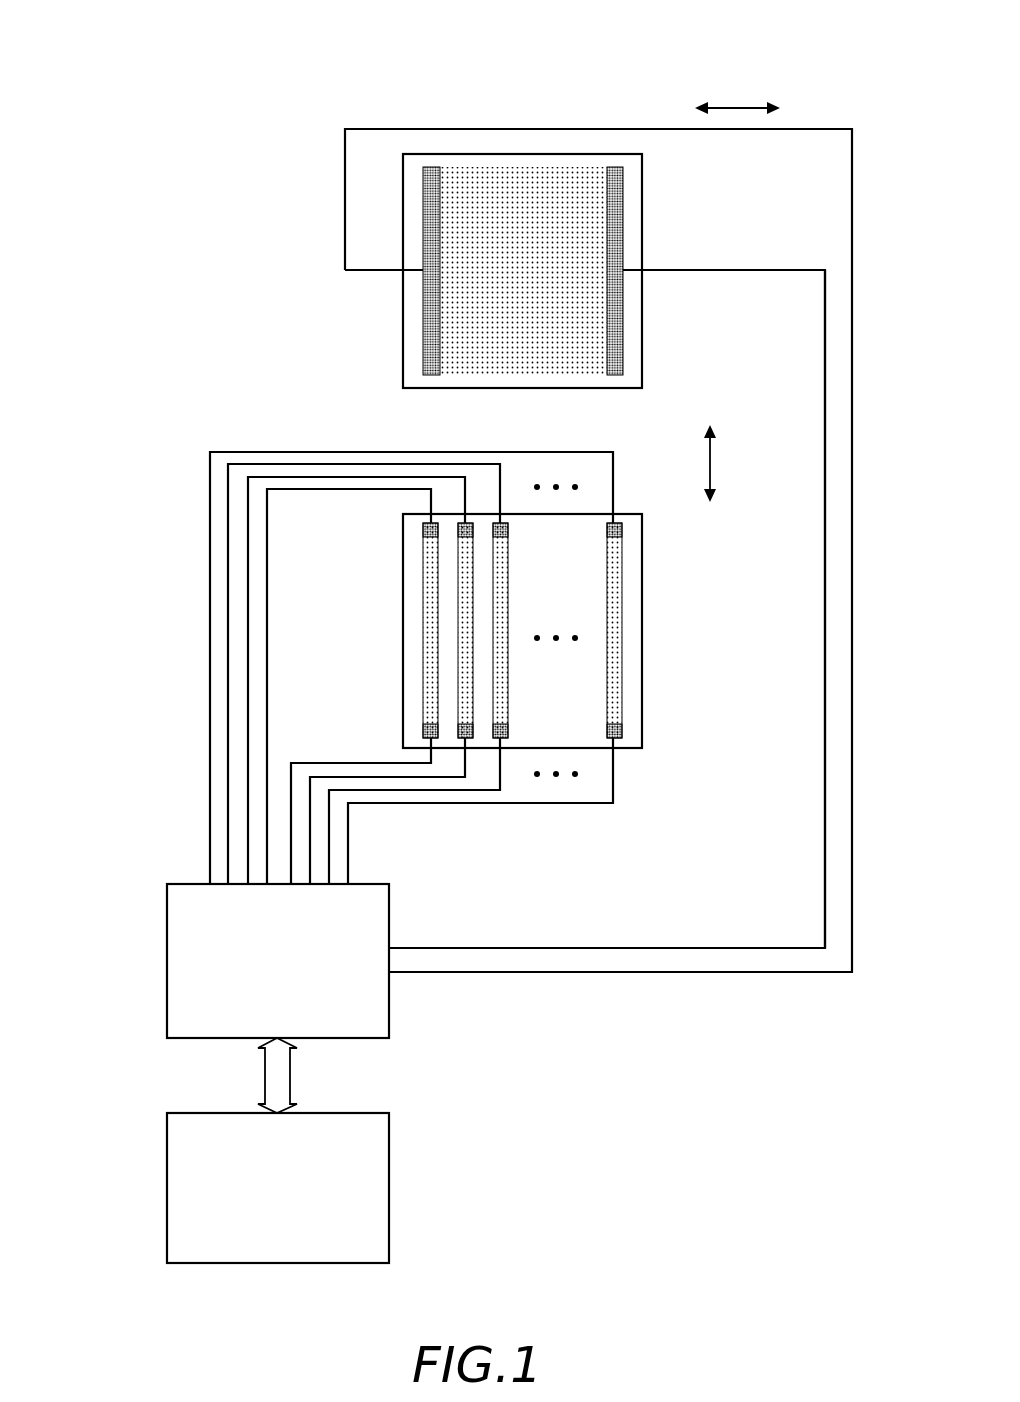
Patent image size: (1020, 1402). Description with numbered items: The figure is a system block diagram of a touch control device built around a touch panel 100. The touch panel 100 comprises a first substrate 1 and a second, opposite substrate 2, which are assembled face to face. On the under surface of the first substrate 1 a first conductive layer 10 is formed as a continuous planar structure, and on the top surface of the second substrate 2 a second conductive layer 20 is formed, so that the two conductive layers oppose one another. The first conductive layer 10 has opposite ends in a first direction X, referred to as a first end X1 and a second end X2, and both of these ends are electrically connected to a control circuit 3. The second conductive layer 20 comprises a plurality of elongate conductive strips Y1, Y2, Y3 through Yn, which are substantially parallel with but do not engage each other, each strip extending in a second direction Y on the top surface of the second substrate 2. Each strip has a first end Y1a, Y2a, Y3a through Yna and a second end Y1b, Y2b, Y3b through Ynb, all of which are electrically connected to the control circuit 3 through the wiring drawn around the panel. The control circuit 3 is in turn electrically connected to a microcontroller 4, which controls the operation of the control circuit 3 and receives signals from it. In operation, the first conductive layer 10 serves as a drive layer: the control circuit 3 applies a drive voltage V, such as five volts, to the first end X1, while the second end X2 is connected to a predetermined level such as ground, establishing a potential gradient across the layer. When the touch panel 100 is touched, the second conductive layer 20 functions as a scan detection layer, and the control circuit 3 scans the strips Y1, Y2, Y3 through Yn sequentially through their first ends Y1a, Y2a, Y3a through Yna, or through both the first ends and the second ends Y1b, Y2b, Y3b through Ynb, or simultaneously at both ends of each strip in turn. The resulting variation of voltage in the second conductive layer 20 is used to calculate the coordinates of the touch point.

The touch panel 100 is at (97, 172).
The first substrate 1 is at (540, 167).
The first conductive layer 10 is at (510, 185).
The first end X1 is at (615, 172).
The second end X2 is at (431, 172).
The first direction X is at (737, 108).
The drive voltage V is at (740, 270).
The second substrate 2 is at (643, 562).
The second conductive layer 20 is at (613, 634).
The elongate conductive strip Y1 is at (431, 563).
The elongate conductive strip Y2 is at (466, 604).
The elongate conductive strip Y3 is at (501, 650).
The elongate conductive strip Yn is at (615, 700).
The first end Y1a is at (431, 523).
The first end Y2a is at (466, 523).
The first end Y3a is at (501, 523).
The first end Yna is at (615, 523).
The second end Y1b is at (432, 738).
The second end Y2b is at (467, 738).
The second end Y3b is at (502, 738).
The second end Ynb is at (615, 738).
The second direction Y is at (712, 463).
The control circuit 3 is at (184, 901).
The microcontroller 4 is at (186, 1131).